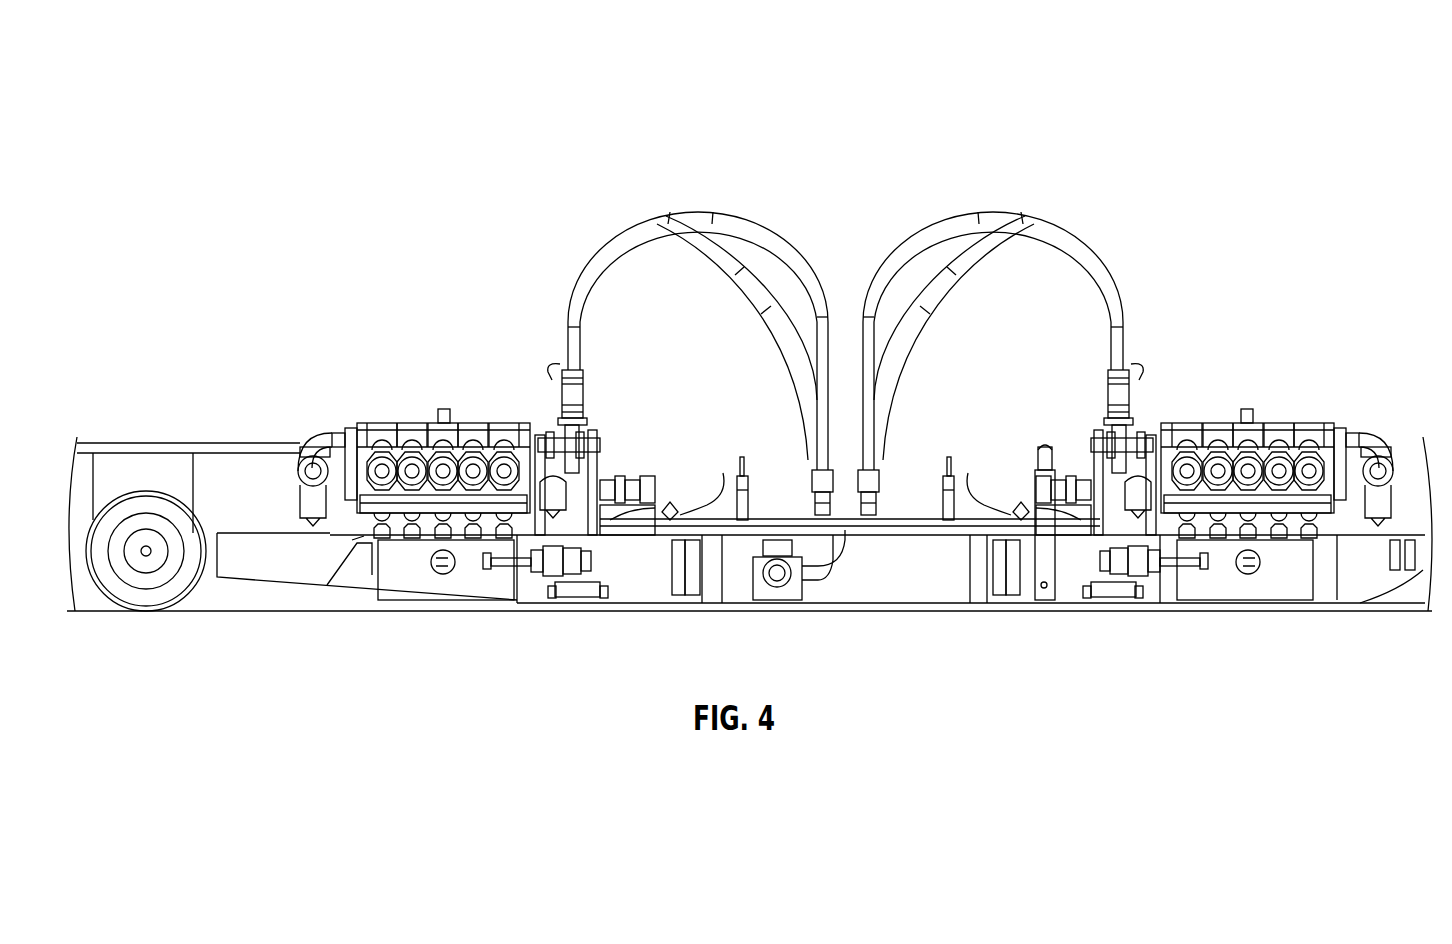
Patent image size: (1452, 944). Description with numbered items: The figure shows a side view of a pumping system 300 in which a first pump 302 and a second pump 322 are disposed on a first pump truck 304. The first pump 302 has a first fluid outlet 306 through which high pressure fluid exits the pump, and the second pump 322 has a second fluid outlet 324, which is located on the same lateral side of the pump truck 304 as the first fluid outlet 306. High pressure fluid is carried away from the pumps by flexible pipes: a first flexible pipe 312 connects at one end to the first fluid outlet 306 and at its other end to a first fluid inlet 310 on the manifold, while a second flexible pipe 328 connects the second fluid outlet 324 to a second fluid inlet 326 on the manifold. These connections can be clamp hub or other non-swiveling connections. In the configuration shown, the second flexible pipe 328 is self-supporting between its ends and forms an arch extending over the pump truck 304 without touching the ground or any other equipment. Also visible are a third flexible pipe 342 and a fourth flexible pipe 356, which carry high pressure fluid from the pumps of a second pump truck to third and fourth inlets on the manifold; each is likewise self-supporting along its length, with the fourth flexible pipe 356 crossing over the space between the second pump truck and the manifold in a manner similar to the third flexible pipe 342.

The pumping system 300 is at (385, 104).
The first pump 302 is at (430, 371).
The first pump truck 304 is at (1027, 633).
The first fluid outlet 306 is at (578, 391).
The first fluid inlet 310 is at (814, 492).
The first flexible pipe 312 is at (743, 290).
The second pump 322 is at (1218, 396).
The second fluid outlet 324 is at (1112, 392).
The second fluid inlet 326 is at (878, 492).
The second flexible pipe 328 is at (952, 290).
The third flexible pipe 342 is at (692, 210).
The fourth flexible pipe 356 is at (1002, 210).